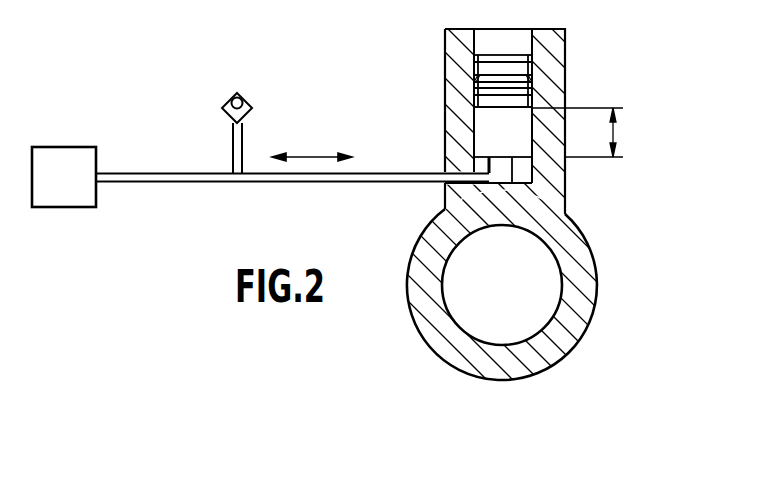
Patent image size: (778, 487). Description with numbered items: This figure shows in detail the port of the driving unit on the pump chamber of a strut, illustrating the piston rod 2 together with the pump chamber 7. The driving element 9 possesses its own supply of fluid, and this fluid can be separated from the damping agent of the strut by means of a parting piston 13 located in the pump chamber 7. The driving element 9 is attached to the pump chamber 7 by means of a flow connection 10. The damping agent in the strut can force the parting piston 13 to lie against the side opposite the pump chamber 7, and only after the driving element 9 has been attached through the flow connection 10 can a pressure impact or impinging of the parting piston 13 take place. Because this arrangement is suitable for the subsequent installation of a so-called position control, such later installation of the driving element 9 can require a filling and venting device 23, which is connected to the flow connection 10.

The piston rod 2 is at (538, 182).
The pump chamber 7 is at (527, 39).
The parting piston 13 is at (505, 82).
The flow connection 10 is at (148, 183).
The driving element 9 is at (68, 195).
The filling and venting device 23 is at (239, 95).